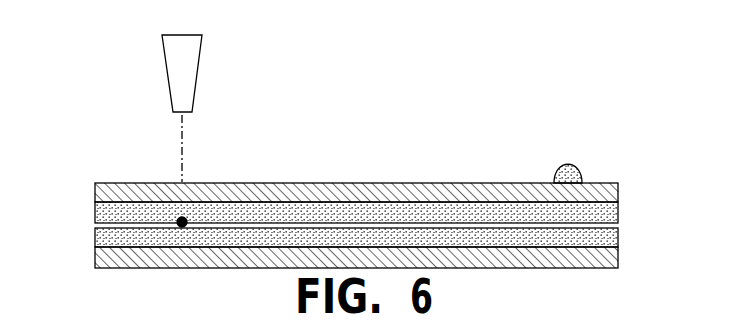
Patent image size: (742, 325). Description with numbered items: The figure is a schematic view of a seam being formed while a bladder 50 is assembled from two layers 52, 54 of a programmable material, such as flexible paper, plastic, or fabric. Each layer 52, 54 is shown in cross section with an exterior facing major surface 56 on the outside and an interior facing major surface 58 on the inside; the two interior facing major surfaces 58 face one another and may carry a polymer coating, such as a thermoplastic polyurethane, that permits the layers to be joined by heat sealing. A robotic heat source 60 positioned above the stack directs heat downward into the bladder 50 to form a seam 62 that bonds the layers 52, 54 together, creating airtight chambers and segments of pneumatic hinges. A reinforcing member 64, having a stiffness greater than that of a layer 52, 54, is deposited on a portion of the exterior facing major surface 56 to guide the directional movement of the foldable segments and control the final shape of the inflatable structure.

The bladder 50 is at (356, 154).
The layer of programmable material 52 is at (356, 223).
The layer of programmable material 54 is at (630, 228).
The exterior facing major surface 56 is at (95, 192).
The interior facing major surface 58 is at (95, 212).
The robotic heat source 60 is at (197, 80).
The seam 62 is at (187, 219).
The reinforcing member 64 is at (569, 163).